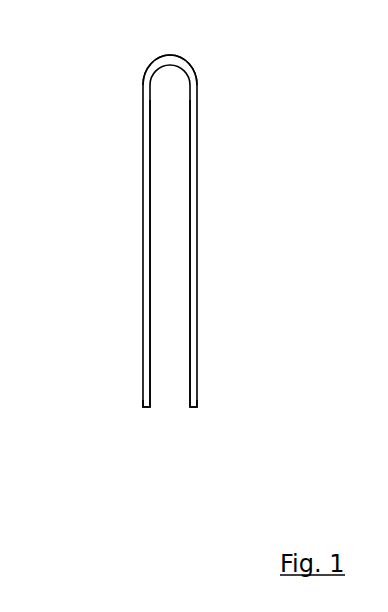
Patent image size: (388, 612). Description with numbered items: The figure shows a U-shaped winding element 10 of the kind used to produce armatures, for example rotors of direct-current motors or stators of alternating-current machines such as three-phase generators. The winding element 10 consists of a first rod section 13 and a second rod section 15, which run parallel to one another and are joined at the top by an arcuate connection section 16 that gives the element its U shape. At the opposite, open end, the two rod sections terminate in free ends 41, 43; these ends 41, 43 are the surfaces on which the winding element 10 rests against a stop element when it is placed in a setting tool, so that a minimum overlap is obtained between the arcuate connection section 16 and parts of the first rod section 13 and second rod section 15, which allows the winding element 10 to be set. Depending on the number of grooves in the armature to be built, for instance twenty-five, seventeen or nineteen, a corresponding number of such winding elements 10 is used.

The U-shaped winding element 10 is at (218, 127).
The arcuate connection section 16 is at (185, 53).
The first rod section 13 is at (212, 225).
The second rod section 15 is at (138, 213).
The end 43 is at (134, 391).
The end 41 is at (205, 402).